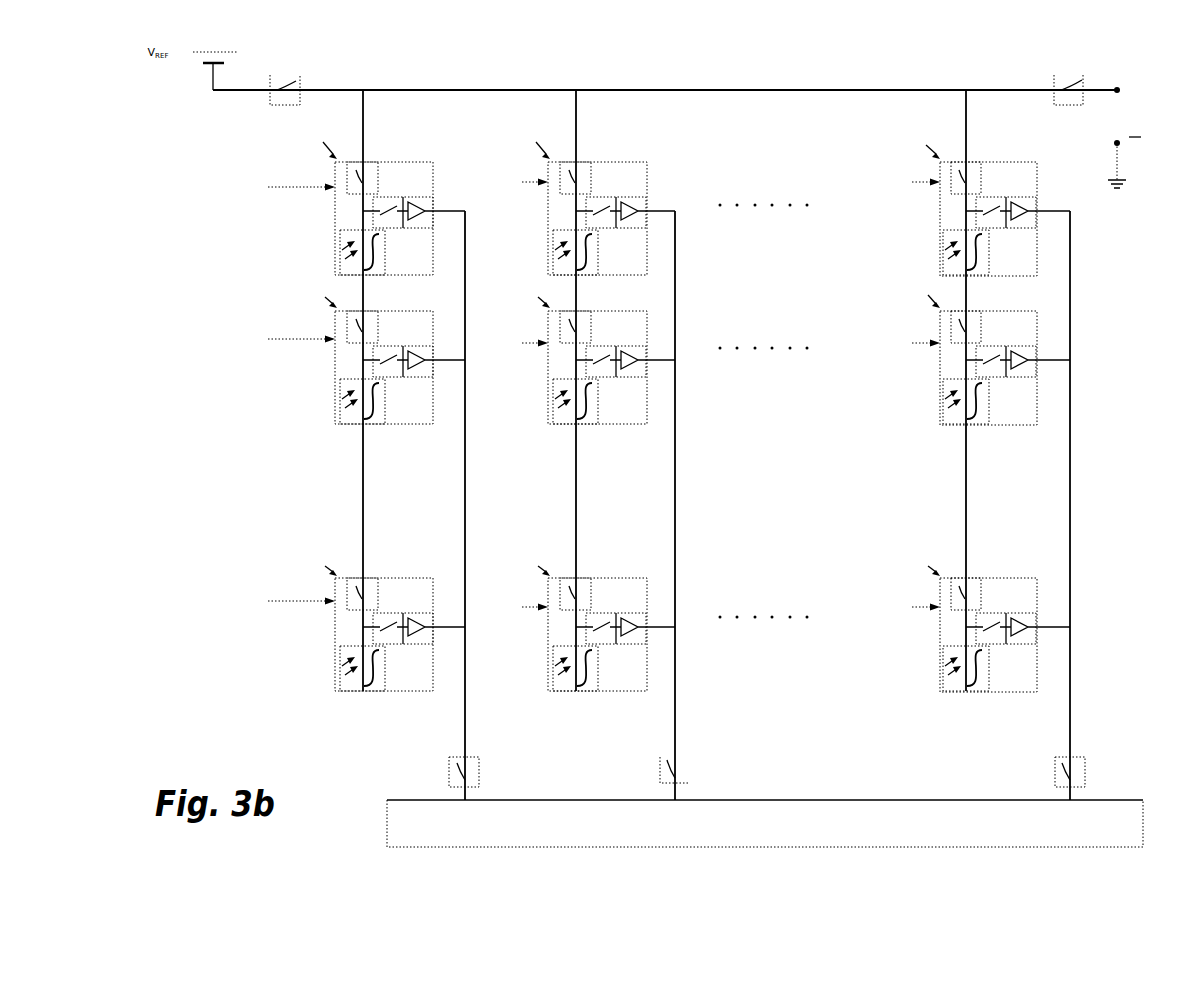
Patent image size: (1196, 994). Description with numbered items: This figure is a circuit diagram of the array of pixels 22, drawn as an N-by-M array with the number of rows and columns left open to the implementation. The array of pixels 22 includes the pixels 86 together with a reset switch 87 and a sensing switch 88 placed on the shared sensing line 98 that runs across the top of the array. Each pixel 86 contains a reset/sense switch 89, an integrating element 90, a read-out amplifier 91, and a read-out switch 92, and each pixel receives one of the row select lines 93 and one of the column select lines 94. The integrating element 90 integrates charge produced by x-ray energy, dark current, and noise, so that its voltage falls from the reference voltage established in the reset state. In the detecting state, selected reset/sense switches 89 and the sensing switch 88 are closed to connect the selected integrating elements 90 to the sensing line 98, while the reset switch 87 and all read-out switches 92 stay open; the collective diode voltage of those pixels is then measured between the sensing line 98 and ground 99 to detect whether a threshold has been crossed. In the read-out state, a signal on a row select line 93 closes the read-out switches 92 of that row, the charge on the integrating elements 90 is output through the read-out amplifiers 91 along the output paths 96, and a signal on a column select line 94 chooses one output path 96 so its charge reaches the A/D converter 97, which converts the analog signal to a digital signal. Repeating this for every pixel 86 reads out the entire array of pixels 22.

The array of pixels 22 is at (231, 701).
The pixel 86 is at (981, 204).
The reset switch 87 is at (300, 75).
The sensing switch 88 is at (1083, 75).
The reset/sense switch 89 is at (594, 178).
The integrating element 90 is at (595, 252).
The read-out amplifier 91 is at (414, 201).
The read-out switch 92 is at (376, 188).
The row select line 93 is at (212, 174).
The column select line 94 is at (482, 765).
The output path 96 is at (1072, 668).
The A/D converter 97 is at (387, 824).
The sensing line 98 is at (672, 88).
The ground 99 is at (1138, 178).